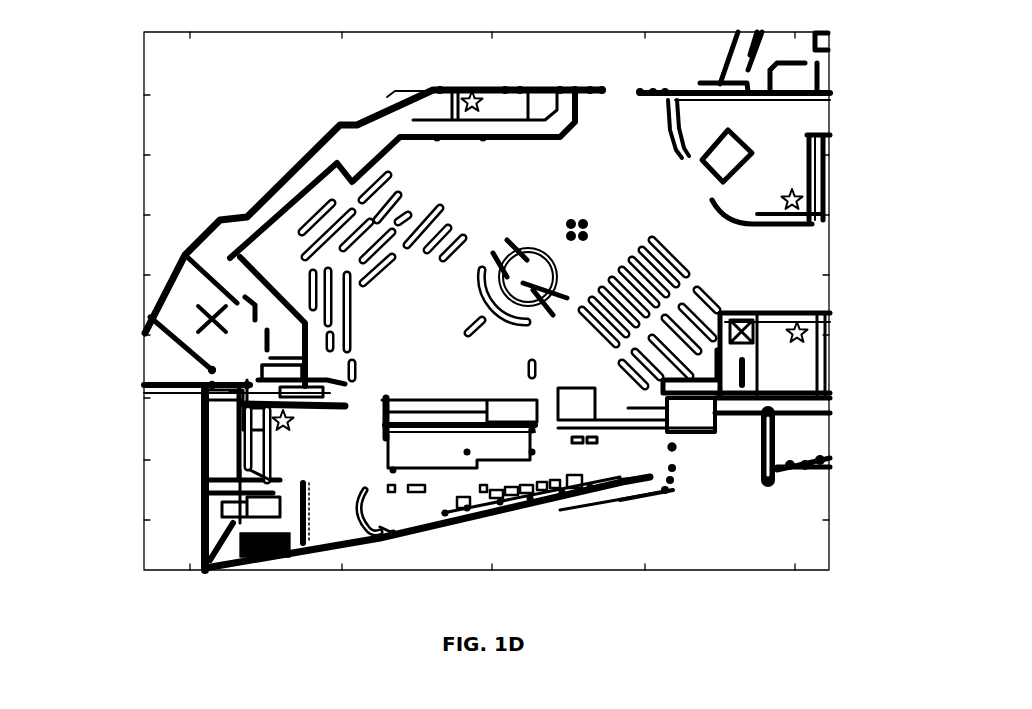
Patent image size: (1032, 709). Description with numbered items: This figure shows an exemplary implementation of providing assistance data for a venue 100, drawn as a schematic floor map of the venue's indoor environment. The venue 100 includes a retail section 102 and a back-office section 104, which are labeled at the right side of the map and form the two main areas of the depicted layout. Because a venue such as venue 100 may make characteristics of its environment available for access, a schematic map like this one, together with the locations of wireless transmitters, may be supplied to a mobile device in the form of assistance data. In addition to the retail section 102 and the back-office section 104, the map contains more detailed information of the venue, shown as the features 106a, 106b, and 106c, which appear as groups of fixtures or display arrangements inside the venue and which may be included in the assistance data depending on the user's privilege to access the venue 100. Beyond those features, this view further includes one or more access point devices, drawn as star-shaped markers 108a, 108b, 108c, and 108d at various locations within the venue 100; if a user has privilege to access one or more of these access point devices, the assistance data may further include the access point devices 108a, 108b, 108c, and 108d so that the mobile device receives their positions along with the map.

The venue 100 is at (112, 543).
The retail section 102 is at (787, 288).
The back-office section 104 is at (790, 517).
The detailed information of the venue 106a is at (683, 262).
The detailed information of the venue 106b is at (435, 207).
The detailed information of the venue 106c is at (352, 332).
The access point device 108a is at (792, 187).
The access point device 108b is at (490, 120).
The access point device 108c is at (293, 427).
The access point device 108d is at (807, 343).